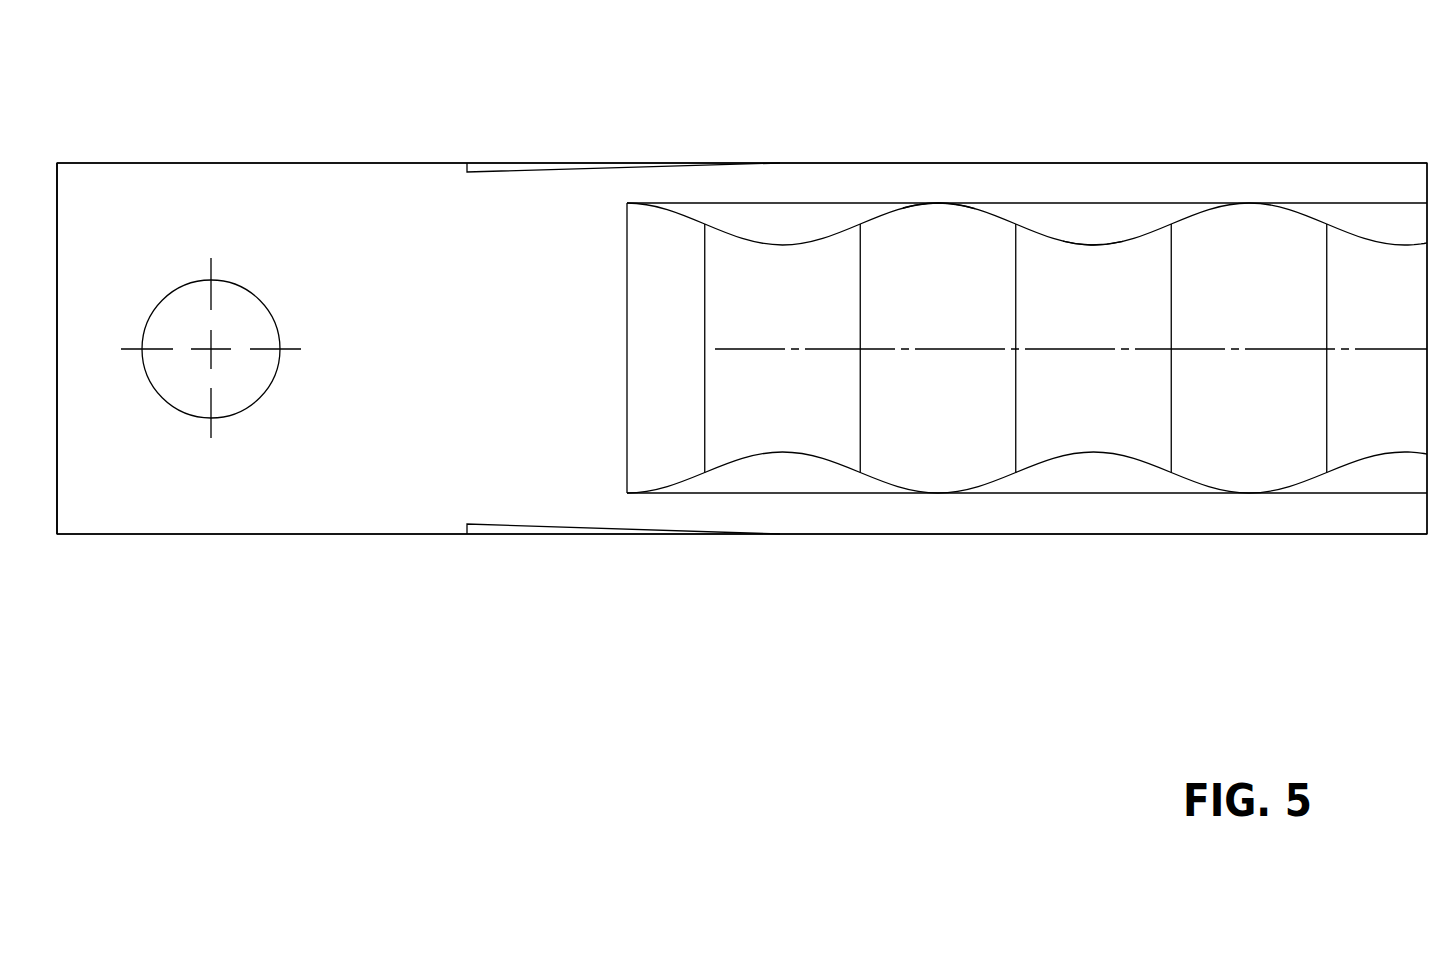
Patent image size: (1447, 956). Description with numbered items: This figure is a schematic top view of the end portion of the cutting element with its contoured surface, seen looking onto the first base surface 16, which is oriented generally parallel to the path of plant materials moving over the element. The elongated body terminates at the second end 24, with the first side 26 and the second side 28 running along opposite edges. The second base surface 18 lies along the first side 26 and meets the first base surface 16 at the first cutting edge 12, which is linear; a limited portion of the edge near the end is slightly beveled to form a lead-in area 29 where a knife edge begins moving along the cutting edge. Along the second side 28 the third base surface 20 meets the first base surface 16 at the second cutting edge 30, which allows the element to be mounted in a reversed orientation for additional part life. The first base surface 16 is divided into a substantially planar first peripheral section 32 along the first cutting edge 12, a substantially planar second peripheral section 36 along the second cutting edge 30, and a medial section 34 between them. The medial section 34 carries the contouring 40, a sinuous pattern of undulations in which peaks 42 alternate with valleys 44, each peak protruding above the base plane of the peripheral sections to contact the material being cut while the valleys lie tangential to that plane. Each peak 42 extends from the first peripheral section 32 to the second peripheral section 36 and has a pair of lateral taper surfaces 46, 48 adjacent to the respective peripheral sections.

The first cutting edge 12 is at (766, 534).
The first base surface 16 is at (294, 500).
The second base surface 18 is at (353, 534).
The third base surface 20 is at (274, 163).
The second end 24 is at (85, 143).
The first side 26 is at (1170, 563).
The second side 28 is at (1263, 145).
The lead-in area 29 is at (486, 534).
The second cutting edge 30 is at (797, 163).
The first peripheral section 32 is at (928, 523).
The medial section 34 is at (963, 205).
The second peripheral section 36 is at (887, 182).
The contouring 40 is at (1097, 225).
The peaks 42 is at (786, 416).
The valleys 44 is at (1255, 452).
The lateral taper surface 46 is at (736, 482).
The lateral taper surface 48 is at (782, 226).